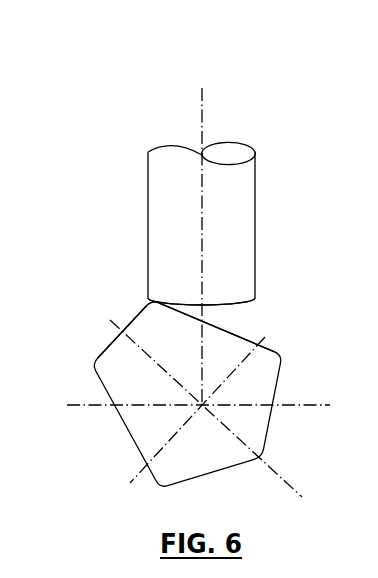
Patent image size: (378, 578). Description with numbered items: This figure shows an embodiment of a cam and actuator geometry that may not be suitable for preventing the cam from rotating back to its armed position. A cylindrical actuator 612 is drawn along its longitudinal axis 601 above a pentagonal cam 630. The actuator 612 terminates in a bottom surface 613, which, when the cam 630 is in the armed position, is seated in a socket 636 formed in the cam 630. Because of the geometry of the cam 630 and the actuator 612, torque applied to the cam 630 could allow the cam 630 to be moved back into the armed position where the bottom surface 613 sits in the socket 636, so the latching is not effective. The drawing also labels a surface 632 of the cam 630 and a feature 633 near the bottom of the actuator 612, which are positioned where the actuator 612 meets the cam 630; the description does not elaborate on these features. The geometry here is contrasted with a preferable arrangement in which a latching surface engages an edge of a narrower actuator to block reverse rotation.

The longitudinal axis 601 is at (204, 101).
The actuator 612 is at (257, 180).
The bottom surface 613 is at (231, 303).
The contact surface of pentagonal member 632 is at (244, 326).
The edge of cylindrical member 633 is at (176, 307).
The socket 636 is at (107, 346).
The cam 630 is at (104, 436).